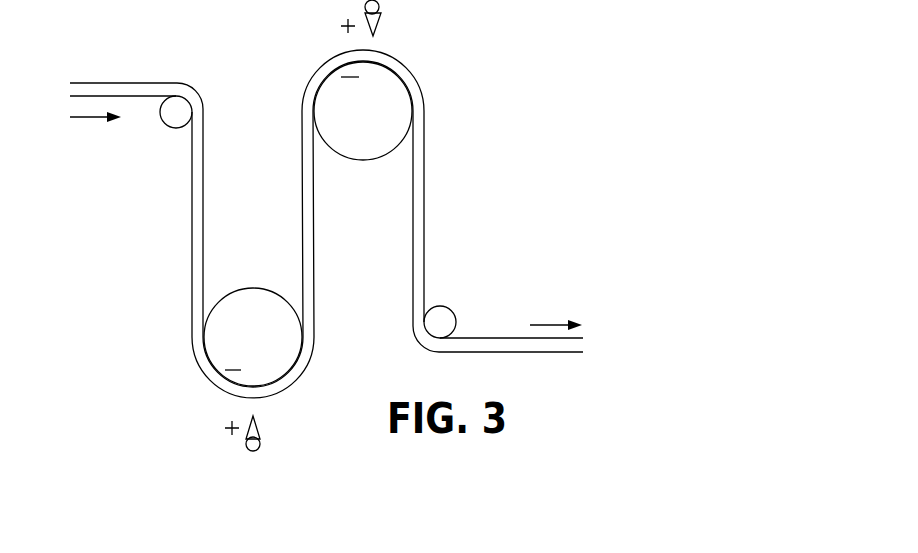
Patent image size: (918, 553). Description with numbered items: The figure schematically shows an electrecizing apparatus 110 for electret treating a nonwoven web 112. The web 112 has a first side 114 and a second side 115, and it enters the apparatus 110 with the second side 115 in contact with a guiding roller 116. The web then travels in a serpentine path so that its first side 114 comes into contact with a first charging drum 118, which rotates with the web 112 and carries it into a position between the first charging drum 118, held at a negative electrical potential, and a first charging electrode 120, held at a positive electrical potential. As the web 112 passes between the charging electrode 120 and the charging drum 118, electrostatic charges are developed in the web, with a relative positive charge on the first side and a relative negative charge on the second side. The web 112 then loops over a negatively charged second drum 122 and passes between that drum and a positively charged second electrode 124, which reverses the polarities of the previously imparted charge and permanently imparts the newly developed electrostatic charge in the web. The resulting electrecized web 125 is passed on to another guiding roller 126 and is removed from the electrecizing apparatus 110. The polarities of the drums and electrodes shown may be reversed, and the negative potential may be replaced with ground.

The electrecizing apparatus 110 is at (152, 273).
The nonwoven web 112 is at (110, 87).
The first side 114 is at (170, 83).
The second side 115 is at (130, 97).
The guiding roller 116 is at (177, 130).
The first charging drum 118 is at (258, 297).
The first charging electrode 120 is at (245, 445).
The second drum 122 is at (398, 98).
The second electrode 124 is at (383, 7).
The electrecized web 125 is at (412, 217).
The guiding roller 126 is at (443, 312).